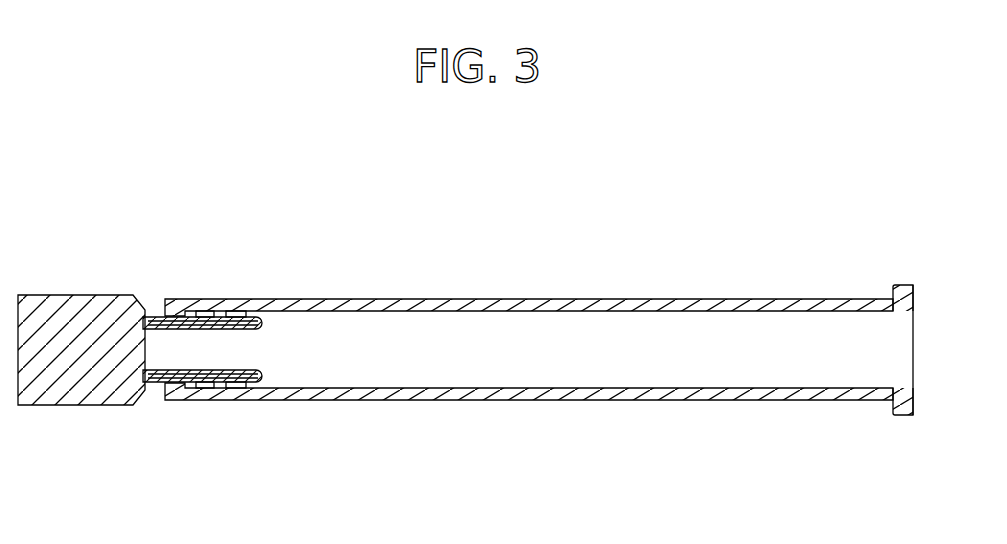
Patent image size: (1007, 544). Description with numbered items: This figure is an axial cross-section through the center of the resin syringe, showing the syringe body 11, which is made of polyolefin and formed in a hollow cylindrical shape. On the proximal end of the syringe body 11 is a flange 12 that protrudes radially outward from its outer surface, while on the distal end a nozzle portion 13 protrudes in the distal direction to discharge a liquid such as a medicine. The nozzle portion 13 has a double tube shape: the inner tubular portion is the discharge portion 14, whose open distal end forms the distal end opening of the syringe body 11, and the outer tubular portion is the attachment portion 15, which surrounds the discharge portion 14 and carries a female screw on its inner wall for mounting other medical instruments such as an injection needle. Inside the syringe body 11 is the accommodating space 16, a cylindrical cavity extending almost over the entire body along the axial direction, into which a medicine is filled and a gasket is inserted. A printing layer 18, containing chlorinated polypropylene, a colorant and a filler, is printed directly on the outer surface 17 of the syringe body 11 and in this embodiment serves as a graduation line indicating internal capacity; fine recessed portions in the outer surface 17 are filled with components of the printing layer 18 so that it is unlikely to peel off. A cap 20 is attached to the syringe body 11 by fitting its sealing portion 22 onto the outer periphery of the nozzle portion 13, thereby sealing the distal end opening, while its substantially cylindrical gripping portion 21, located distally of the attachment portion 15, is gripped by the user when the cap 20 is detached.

The syringe body 11 is at (182, 188).
The flange 12 is at (904, 285).
The nozzle portion 13 is at (183, 233).
The discharge portion 14 is at (238, 299).
The attachment portion 15 is at (196, 299).
The accommodating space 16 is at (437, 327).
The outer surface 17 is at (517, 298).
The printing layer 18 is at (568, 401).
The cap 20 is at (65, 472).
The gripping portion 21 is at (90, 404).
The sealing portion 22 is at (163, 401).